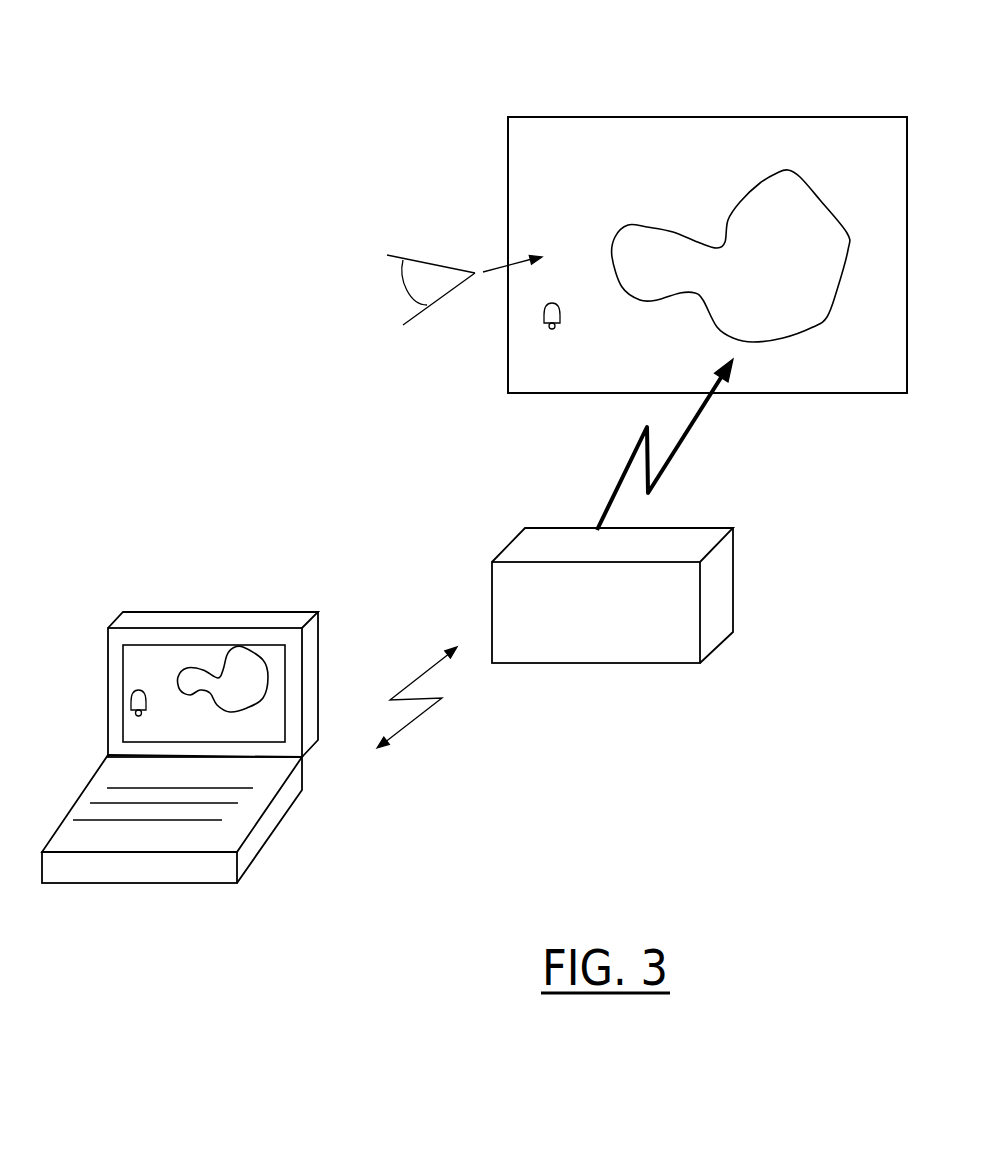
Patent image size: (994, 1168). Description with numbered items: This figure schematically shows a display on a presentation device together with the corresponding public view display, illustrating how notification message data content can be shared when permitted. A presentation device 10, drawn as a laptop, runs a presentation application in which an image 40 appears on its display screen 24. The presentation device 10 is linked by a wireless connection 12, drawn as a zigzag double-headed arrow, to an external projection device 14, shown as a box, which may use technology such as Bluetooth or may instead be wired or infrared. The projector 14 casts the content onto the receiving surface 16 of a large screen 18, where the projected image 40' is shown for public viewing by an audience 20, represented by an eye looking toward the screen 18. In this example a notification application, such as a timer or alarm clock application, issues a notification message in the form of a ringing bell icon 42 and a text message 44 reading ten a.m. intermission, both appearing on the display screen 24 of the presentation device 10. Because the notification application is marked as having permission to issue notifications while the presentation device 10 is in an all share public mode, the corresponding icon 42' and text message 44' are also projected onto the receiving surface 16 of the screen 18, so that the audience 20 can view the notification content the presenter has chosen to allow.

The presentation device 10 is at (358, 639).
The wireless connection 12 is at (430, 712).
The projector 14 is at (735, 613).
The receiving surface 16 is at (561, 181).
The screen 18 is at (595, 117).
The audience 20 is at (431, 260).
The display screen 24 is at (170, 657).
The image 40 is at (242, 616).
The projected image 40' is at (731, 185).
The ringing bell icon 42 is at (98, 663).
The projected icon 42' is at (490, 336).
The text message 44 is at (149, 712).
The projected text message 44' is at (544, 387).